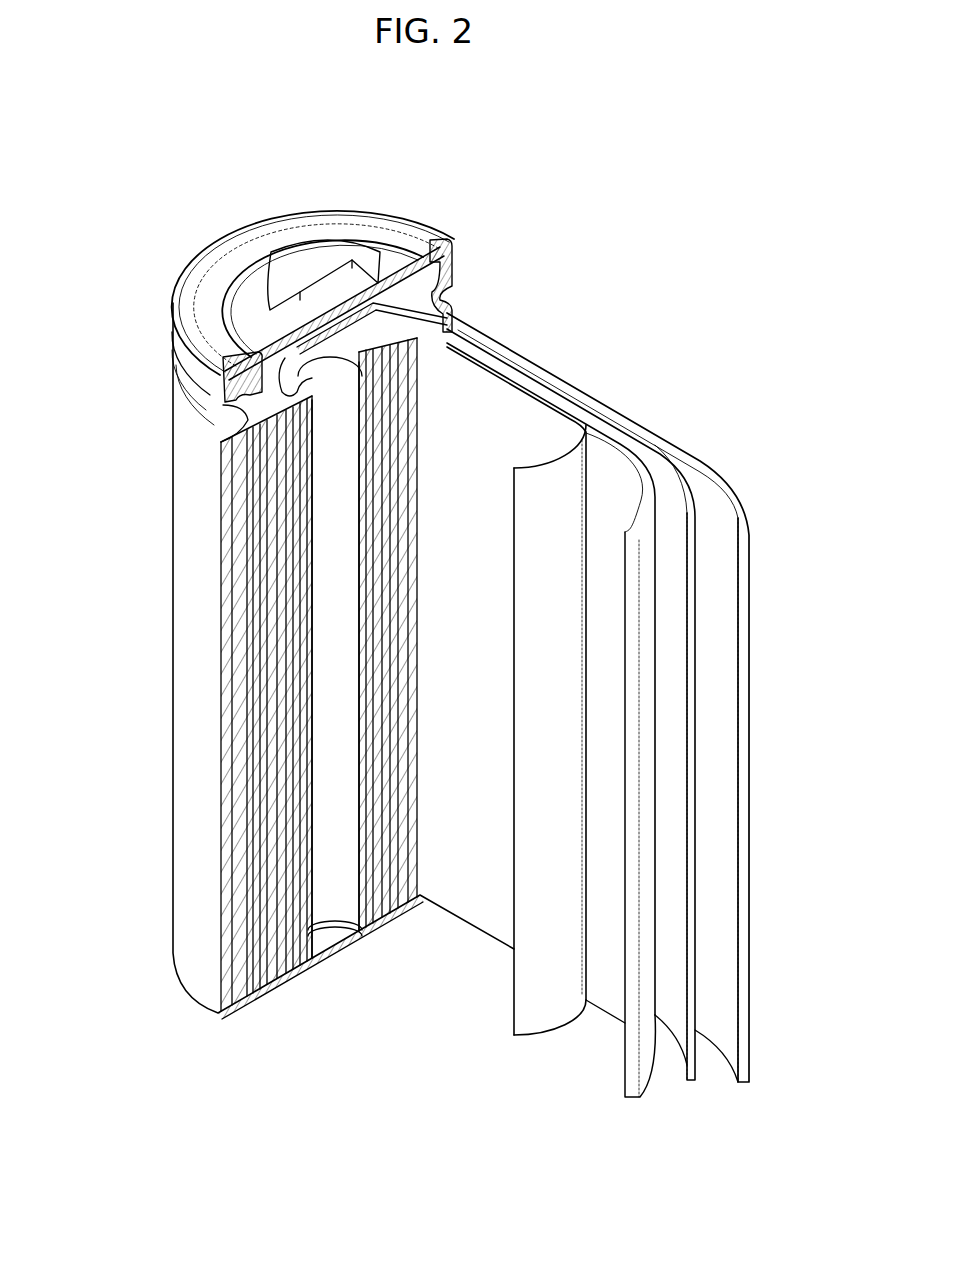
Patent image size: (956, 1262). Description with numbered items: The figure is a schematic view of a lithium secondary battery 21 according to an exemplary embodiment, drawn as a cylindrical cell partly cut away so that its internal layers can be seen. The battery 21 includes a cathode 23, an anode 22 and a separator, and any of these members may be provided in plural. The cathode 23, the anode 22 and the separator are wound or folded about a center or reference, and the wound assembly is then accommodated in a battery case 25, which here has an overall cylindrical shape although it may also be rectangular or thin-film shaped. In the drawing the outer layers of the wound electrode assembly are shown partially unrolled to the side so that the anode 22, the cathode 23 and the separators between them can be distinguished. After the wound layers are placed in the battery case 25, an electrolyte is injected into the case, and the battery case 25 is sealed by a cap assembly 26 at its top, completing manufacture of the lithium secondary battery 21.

The lithium secondary battery 21 is at (545, 240).
The anode 22 is at (737, 492).
The cathode 23 is at (610, 440).
The battery case 25 is at (181, 656).
The cap assembly 26 is at (303, 255).